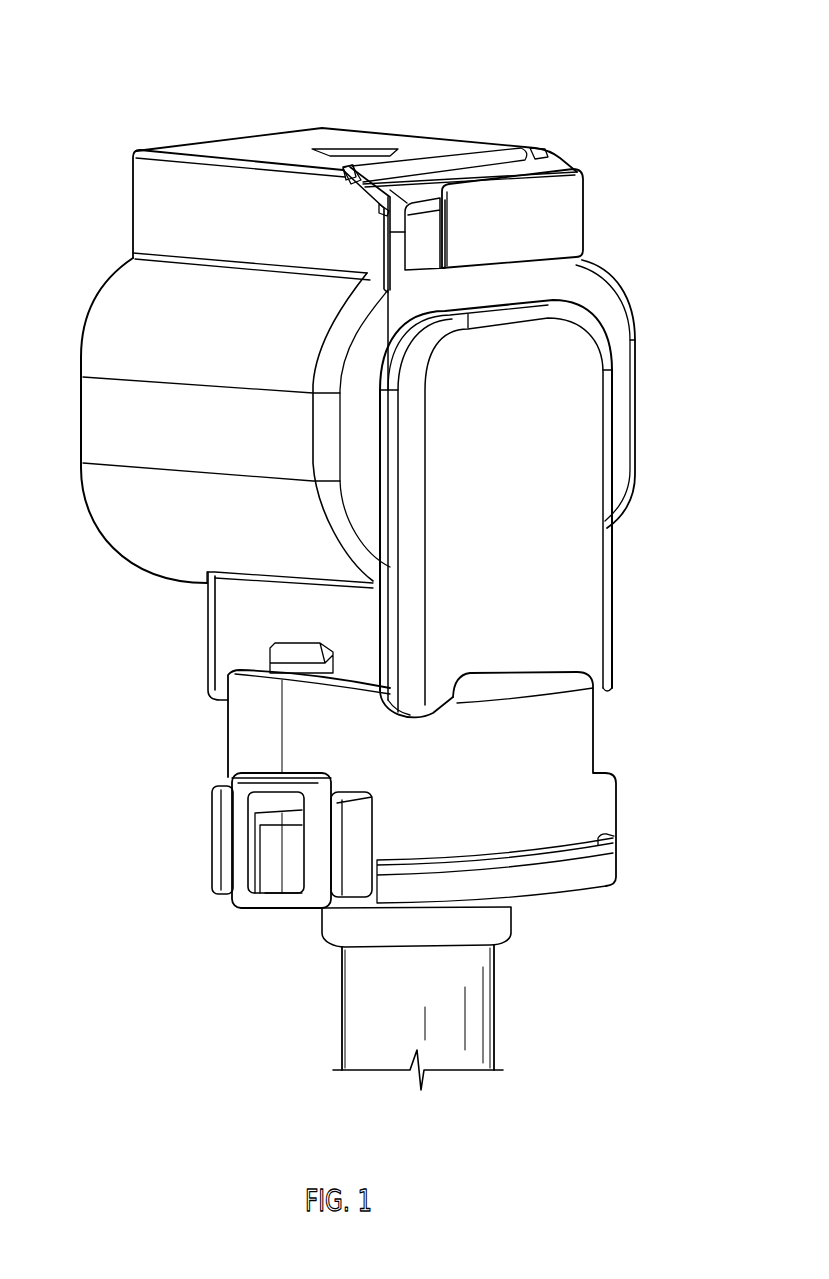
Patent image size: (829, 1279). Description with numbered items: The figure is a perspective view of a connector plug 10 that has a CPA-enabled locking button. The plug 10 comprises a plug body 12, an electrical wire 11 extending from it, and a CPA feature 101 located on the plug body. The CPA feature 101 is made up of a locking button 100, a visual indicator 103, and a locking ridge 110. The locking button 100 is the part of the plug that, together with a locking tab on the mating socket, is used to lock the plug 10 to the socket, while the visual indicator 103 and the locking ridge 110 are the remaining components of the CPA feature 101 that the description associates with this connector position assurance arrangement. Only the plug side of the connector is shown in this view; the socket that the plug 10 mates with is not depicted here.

The connector plug 10 is at (606, 92).
The electrical wire 11 is at (472, 1022).
The plug body 12 is at (618, 354).
The locking button 100 is at (567, 215).
The CPA feature 101 is at (215, 150).
The visual indicator 103 is at (375, 157).
The locking ridge 110 is at (388, 247).